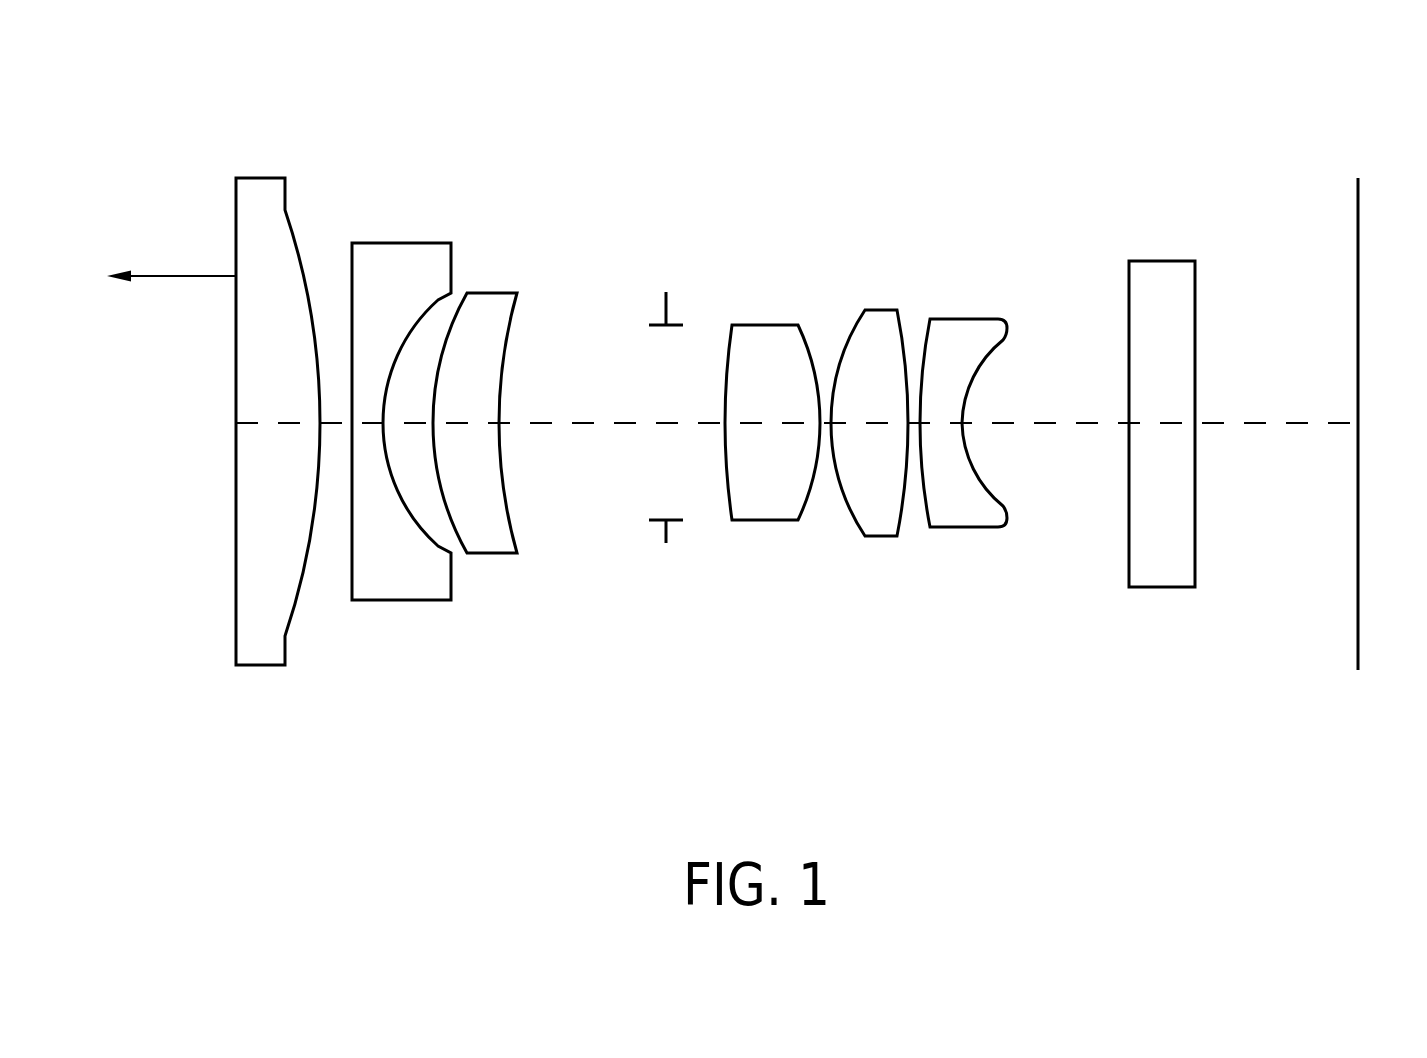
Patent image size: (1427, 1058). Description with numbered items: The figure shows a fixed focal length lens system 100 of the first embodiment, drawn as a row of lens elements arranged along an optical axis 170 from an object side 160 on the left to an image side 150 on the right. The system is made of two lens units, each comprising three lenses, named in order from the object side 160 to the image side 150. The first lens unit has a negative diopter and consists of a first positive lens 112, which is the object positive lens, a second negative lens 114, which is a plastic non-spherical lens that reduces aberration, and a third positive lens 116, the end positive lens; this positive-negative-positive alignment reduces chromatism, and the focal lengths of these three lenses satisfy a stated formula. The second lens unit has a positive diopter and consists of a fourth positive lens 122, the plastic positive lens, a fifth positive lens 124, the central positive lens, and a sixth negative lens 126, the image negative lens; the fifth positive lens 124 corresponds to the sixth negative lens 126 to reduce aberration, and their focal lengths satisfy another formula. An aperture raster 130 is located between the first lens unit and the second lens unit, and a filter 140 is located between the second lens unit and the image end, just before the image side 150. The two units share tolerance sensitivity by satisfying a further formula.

The fixed focal length lens system 100 is at (1417, 79).
The first positive lens 112 is at (269, 633).
The second negative lens 114 is at (403, 585).
The third positive lens 116 is at (485, 535).
The fourth positive lens 122 is at (766, 507).
The fifth positive lens 124 is at (882, 517).
The sixth negative lens 126 is at (963, 508).
The aperture raster 130 is at (666, 545).
The filter 140 is at (1163, 563).
The image side 150 is at (1358, 640).
The object side 160 is at (144, 275).
The optical axis 170 is at (273, 422).